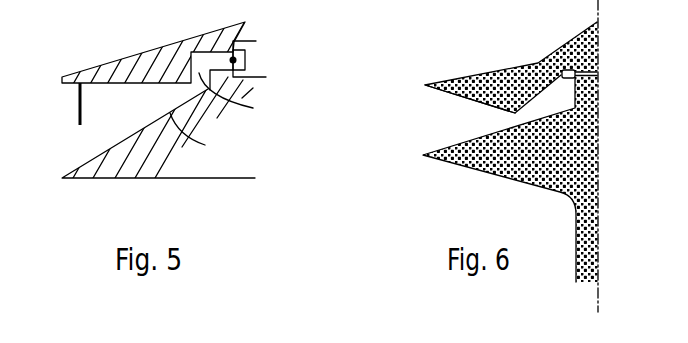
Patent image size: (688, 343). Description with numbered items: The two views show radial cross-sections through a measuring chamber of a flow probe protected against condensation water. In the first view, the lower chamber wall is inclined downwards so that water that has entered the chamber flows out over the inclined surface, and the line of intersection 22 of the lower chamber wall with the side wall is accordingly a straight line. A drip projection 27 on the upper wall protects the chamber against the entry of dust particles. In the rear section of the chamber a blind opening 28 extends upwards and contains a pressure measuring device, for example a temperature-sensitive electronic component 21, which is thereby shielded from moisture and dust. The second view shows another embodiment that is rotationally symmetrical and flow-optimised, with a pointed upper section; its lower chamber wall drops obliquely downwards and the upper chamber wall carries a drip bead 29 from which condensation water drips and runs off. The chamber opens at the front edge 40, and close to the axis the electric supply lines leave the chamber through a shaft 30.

In FIG. 5, the temperature-sensitive electronic component 21 is at (245, 60).
In FIG. 5, the line of intersection 22 is at (204, 145).
In FIG. 6, the line of intersection 22 is at (538, 118).
In FIG. 5, the drip projection 27 is at (77, 111).
In FIG. 5, the blind opening 28 is at (252, 108).
In FIG. 6, the drip bead 29 is at (513, 117).
In FIG. 6, the shaft 30 is at (599, 268).
In FIG. 6, the front edge 40 is at (423, 155).